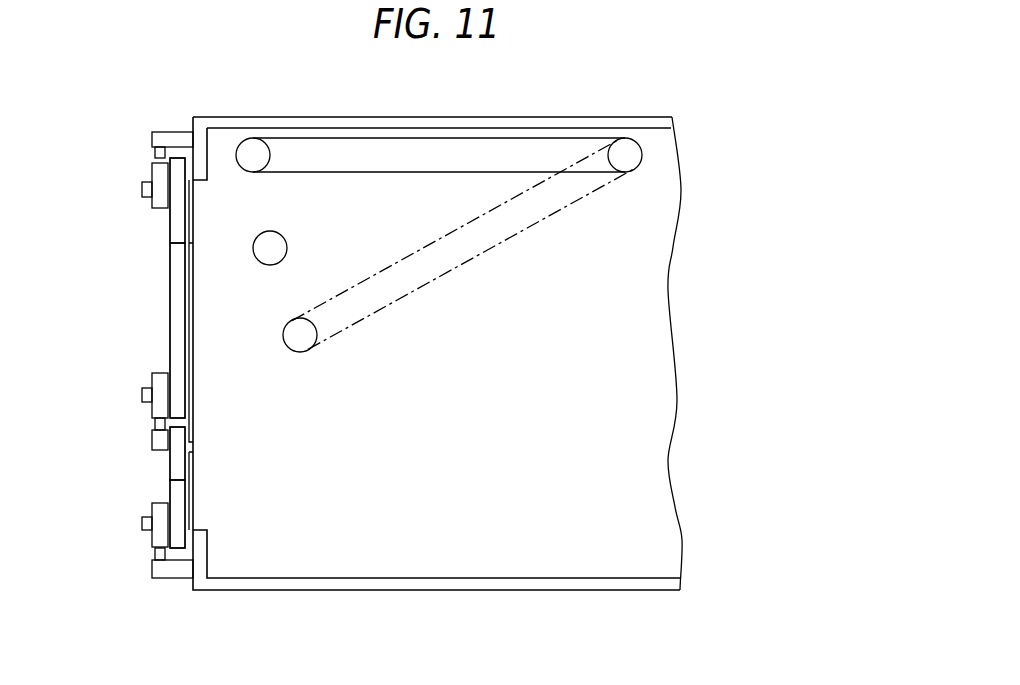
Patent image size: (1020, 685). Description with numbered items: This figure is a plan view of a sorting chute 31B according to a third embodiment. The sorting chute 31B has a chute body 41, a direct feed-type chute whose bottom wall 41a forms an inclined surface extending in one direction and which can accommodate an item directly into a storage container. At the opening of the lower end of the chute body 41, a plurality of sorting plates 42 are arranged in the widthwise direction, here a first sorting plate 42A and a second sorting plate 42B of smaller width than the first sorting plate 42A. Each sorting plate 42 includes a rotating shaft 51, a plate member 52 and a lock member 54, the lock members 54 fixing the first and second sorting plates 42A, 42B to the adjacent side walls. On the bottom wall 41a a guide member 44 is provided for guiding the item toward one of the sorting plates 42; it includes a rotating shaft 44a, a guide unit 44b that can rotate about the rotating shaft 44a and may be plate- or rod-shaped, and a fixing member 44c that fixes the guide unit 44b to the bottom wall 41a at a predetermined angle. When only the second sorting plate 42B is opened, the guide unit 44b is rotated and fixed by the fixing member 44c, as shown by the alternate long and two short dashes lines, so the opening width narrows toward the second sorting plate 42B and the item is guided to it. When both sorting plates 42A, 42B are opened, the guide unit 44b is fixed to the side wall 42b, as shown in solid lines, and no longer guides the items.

The sorting chute 31B is at (786, 133).
The chute body 41 is at (516, 360).
The bottom wall 41a is at (663, 400).
The sorting plate 42 is at (112, 355).
The first sorting plate 42A is at (152, 289).
The second sorting plate 42B is at (152, 476).
The side wall 42b is at (468, 117).
The guide member 44 is at (440, 245).
The rotating shaft 44a is at (623, 150).
The guide unit 44b is at (372, 155).
The fixing member 44c is at (253, 152).
The rotating shaft 51 is at (169, 318).
The plate member 52 is at (169, 246).
The lock member 54 is at (142, 187).